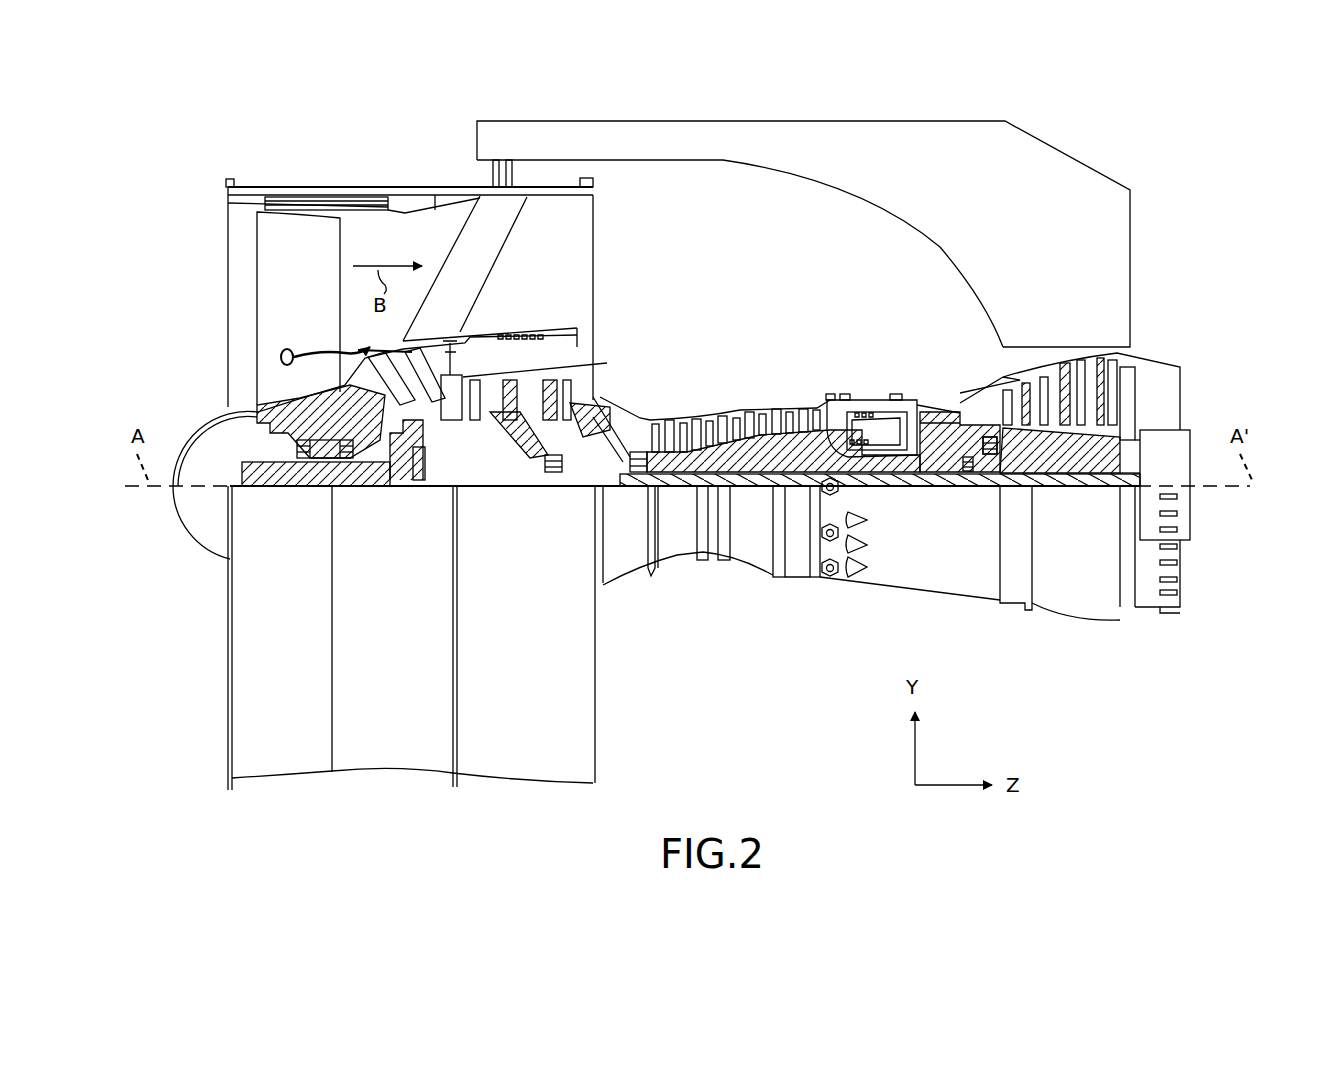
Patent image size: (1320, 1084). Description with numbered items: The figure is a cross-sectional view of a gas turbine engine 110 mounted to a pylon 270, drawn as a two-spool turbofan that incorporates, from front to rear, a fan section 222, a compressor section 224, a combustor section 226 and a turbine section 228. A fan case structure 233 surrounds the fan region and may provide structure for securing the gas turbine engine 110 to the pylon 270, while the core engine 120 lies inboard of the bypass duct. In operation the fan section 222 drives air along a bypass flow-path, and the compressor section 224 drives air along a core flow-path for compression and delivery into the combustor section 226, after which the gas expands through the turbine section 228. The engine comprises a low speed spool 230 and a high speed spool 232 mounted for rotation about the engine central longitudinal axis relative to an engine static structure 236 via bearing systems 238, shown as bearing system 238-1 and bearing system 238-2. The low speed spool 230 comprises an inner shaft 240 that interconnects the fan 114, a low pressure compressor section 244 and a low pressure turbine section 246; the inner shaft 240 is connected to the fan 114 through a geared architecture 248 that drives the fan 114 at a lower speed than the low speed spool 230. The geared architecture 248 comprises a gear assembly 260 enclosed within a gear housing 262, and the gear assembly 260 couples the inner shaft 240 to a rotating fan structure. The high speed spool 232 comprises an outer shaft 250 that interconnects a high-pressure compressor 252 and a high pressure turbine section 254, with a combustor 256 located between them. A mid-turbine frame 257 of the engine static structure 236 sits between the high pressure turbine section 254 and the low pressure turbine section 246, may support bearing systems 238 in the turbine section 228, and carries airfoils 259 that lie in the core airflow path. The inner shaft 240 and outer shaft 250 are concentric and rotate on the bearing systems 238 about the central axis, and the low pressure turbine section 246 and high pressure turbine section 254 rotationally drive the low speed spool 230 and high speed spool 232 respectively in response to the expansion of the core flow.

The gas turbine engine 110 is at (1195, 211).
The fan 114 is at (318, 308).
The core engine 120 is at (770, 322).
The fan section 222 is at (455, 166).
The compressor section 224 is at (817, 294).
The combustor section 226 is at (923, 294).
The turbine section 228 is at (1128, 294).
The low speed spool 230 is at (758, 492).
The high speed spool 232 is at (794, 456).
The fan case structure 233 is at (595, 826).
The engine static structure 236 is at (793, 562).
The bearing system 238 is at (972, 488).
The bearing system 238-1 is at (307, 460).
The bearing system 238-2 is at (548, 478).
The inner shaft 240 is at (617, 488).
The low pressure compressor section 244 is at (530, 390).
The low pressure turbine section 246 is at (1065, 374).
The geared architecture 248 is at (419, 496).
The outer shaft 250 is at (867, 473).
The high-pressure compressor 252 is at (747, 460).
The high pressure turbine section 254 is at (937, 400).
The combustor 256 is at (867, 428).
The mid-turbine frame 257 is at (980, 420).
The airfoils 259 is at (980, 420).
The gear assembly 260 is at (420, 473).
The gear housing 262 is at (418, 437).
The pylon 270 is at (1064, 170).